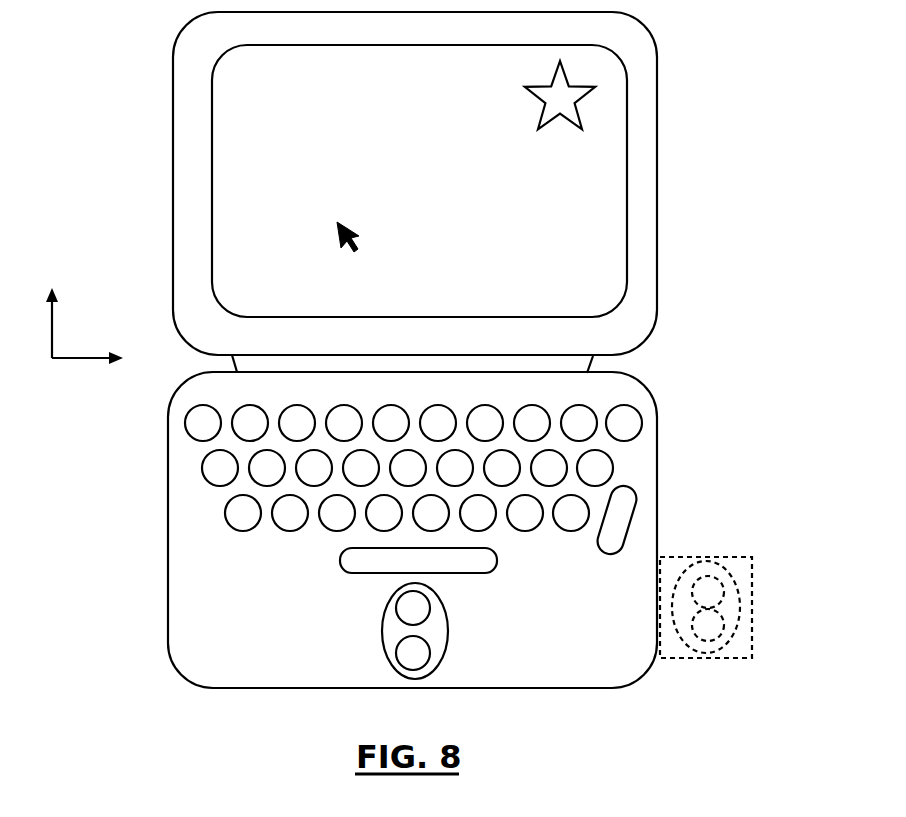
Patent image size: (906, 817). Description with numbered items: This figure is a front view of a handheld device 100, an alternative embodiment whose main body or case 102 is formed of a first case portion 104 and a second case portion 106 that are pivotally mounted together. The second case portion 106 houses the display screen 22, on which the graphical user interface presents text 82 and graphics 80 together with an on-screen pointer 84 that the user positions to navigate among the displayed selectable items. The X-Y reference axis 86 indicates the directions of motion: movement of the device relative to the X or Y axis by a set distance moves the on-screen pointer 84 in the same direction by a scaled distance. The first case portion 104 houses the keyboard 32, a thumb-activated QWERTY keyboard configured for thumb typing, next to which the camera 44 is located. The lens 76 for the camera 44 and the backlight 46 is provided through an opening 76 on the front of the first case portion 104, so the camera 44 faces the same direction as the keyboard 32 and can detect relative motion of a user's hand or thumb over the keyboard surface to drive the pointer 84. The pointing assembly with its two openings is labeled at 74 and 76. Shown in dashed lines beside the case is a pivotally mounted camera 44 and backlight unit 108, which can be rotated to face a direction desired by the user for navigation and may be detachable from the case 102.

The handheld device 100 is at (430, 192).
The second case portion 106 is at (657, 193).
The screen 22 is at (242, 187).
The text 82 is at (405, 162).
The graphics 80 is at (537, 97).
The pointer 84 is at (352, 242).
The X-Y reference axis 86 is at (52, 330).
The main body or case 102 is at (409, 530).
The first case portion 104 is at (657, 462).
The keyboard 32 is at (183, 529).
The upper pointing device portion 74 is at (382, 608).
The lens 76 is at (390, 643).
The camera 44 is at (433, 613).
The backlight 46 is at (435, 647).
The backlight unit 108 is at (752, 612).